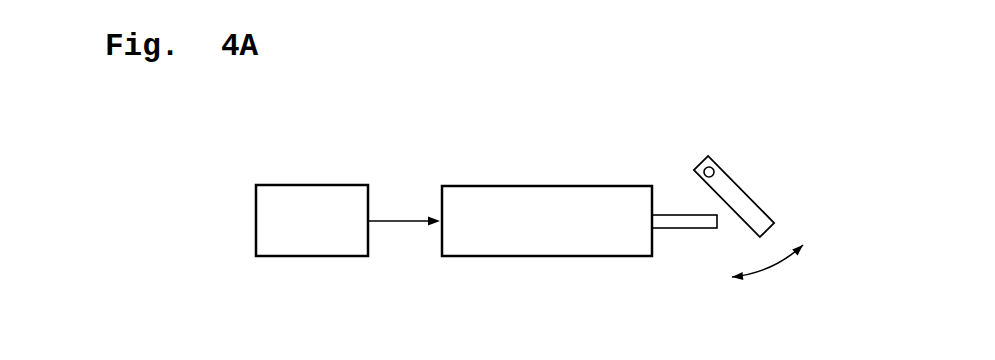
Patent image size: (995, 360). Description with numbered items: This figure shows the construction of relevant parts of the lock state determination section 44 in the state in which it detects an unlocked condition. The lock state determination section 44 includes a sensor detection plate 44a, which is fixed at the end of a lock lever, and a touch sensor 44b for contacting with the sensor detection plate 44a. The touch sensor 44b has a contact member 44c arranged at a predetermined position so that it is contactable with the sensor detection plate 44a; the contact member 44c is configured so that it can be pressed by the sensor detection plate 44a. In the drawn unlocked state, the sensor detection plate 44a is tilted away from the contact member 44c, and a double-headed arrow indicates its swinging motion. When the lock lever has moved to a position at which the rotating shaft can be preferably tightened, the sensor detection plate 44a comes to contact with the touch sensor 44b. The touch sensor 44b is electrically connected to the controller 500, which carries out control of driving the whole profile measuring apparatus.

The lock state determination section 44 is at (632, 117).
The sensor detection plate 44a is at (724, 179).
The touch sensor 44b is at (527, 238).
The contact member 44c is at (693, 222).
The controller 500 is at (322, 238).